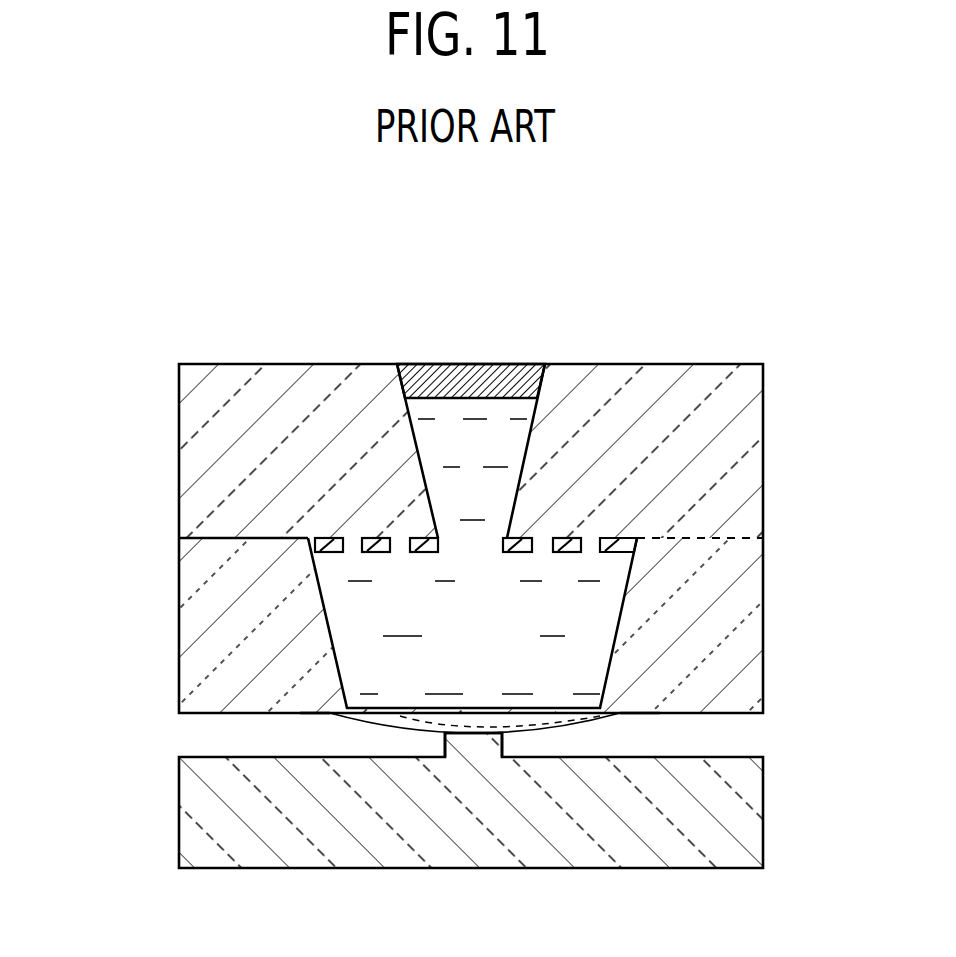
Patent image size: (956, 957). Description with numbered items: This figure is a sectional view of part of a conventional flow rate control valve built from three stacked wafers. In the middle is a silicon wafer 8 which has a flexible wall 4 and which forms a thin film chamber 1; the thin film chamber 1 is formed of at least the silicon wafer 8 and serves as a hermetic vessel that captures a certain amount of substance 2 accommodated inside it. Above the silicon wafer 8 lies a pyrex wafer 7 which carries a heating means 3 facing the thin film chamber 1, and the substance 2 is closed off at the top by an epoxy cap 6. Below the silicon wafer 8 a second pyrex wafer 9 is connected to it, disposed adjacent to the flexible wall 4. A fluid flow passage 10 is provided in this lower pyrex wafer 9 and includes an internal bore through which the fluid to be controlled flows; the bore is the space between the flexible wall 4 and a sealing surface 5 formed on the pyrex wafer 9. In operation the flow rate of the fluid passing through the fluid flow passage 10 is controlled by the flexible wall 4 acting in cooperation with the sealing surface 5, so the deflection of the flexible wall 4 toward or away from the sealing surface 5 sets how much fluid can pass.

The thin film chamber 1 is at (474, 556).
The substance 2 is at (373, 675).
The heating means 3 is at (562, 538).
The flexible wall 4 is at (483, 707).
The sealing surface 5 is at (474, 734).
The epoxy cap 6 is at (468, 363).
The pyrex wafer 7 is at (243, 412).
The silicon wafer 8 is at (242, 600).
The pyrex wafer 9 is at (243, 838).
The fluid flow passage 10 is at (365, 745).